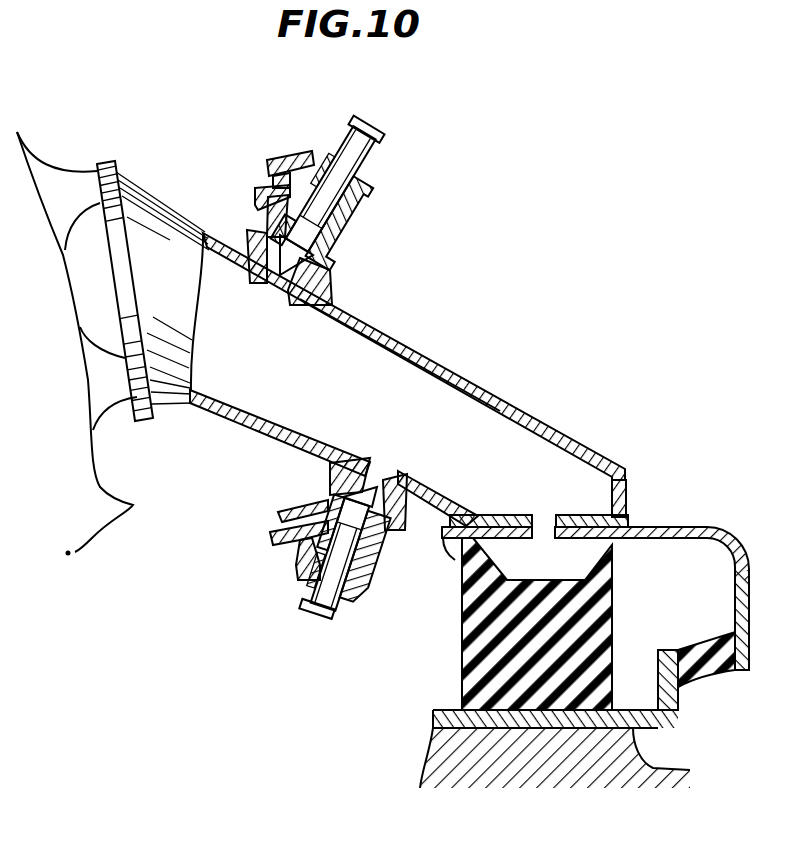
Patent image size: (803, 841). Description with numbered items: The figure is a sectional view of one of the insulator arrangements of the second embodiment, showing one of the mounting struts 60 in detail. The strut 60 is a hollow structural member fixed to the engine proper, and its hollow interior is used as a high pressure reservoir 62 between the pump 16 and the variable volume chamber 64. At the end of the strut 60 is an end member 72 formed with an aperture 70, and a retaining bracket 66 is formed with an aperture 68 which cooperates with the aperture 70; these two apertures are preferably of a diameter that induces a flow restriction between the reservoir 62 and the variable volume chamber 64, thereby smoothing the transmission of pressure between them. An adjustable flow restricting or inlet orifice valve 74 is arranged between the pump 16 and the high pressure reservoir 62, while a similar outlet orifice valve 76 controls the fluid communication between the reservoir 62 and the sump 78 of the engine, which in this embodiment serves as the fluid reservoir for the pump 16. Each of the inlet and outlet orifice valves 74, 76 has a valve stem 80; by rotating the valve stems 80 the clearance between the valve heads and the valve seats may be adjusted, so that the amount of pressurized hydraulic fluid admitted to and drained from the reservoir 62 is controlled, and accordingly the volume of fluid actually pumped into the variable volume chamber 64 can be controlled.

The pump 16 is at (257, 168).
The mounting strut 60 is at (513, 407).
The high pressure reservoir 62 is at (415, 378).
The variable volume chamber 64 is at (500, 562).
The retaining bracket 66 is at (750, 643).
The aperture 68 is at (613, 566).
The aperture 70 is at (588, 565).
The end member 72 is at (632, 520).
The inlet orifice valve 74 is at (340, 243).
The outlet orifice valve 76 is at (360, 600).
The sump 78 is at (263, 520).
The valve stem 80 is at (353, 160).